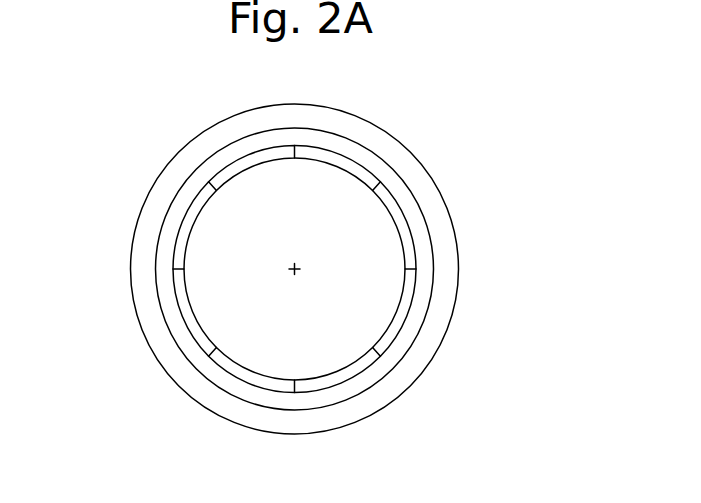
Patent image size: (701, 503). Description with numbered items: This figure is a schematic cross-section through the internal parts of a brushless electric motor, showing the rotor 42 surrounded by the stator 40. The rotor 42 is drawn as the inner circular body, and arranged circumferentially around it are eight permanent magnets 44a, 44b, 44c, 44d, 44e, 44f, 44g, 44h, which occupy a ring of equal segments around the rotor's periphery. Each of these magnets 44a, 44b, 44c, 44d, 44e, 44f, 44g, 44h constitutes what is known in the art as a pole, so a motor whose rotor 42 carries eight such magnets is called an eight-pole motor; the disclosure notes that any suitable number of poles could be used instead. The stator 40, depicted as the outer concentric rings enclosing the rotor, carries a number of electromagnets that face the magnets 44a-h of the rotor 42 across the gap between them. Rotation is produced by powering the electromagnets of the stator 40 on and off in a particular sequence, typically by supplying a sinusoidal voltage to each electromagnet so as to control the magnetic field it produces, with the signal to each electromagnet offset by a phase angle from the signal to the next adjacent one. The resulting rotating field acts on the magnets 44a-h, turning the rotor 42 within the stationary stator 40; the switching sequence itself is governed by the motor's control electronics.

The stator 40 is at (168, 167).
The rotor 42 is at (330, 225).
The magnet 44a is at (342, 160).
The magnet 44b is at (412, 238).
The magnet 44c is at (398, 322).
The magnet 44d is at (350, 372).
The magnet 44e is at (239, 373).
The magnet 44f is at (185, 310).
The magnet 44g is at (187, 223).
The magnet 44h is at (250, 160).